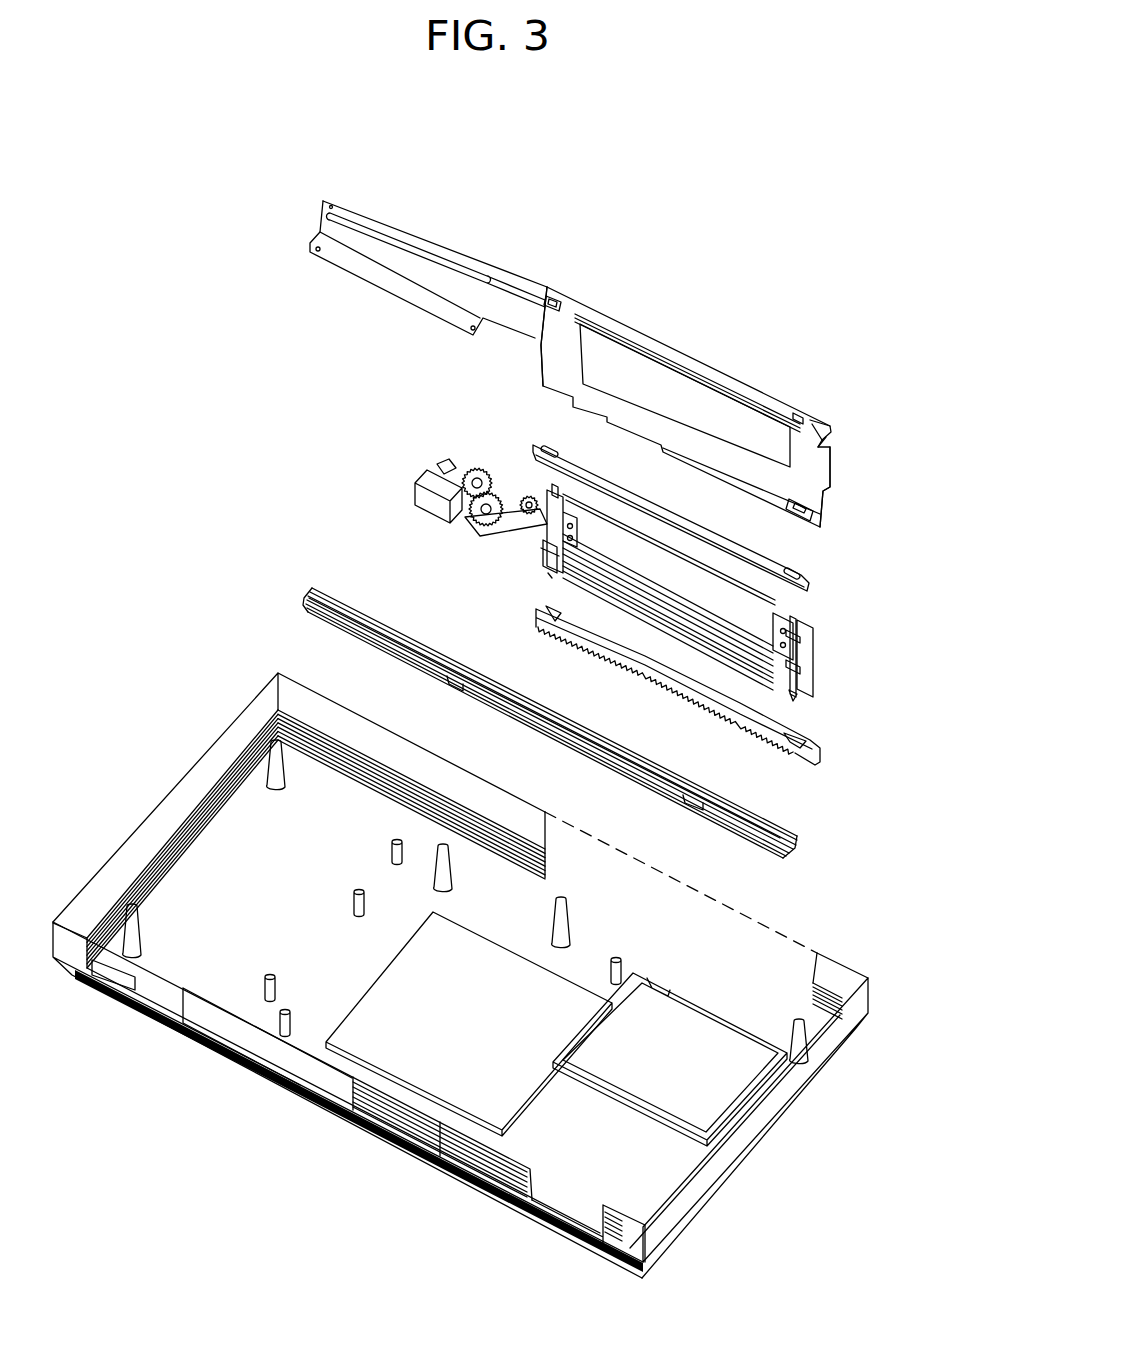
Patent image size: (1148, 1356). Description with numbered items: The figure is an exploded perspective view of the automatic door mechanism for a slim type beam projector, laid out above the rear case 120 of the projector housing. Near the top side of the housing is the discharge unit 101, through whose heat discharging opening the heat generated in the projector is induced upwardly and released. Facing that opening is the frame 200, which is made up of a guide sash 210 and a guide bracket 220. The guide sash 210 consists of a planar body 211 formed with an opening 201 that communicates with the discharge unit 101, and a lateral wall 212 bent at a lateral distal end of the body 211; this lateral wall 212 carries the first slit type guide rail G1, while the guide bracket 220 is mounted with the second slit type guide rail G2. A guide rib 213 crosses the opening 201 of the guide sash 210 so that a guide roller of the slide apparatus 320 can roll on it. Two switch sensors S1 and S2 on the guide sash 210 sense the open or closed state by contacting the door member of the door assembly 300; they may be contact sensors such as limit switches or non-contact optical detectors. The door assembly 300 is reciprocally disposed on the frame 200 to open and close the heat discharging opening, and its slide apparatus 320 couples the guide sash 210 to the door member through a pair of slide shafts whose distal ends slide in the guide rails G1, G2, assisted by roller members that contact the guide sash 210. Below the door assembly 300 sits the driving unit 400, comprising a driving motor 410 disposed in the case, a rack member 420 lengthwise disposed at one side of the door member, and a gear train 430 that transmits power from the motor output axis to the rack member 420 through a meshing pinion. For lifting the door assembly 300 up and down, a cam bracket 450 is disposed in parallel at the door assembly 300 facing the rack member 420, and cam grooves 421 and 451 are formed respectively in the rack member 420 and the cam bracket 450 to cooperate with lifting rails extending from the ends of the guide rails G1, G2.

The discharge unit 101 is at (468, 975).
The rear case 120 is at (723, 1153).
The frame 200 is at (537, 283).
The opening 201 is at (663, 377).
The guide sash 210 is at (705, 400).
The planar body 211 is at (553, 340).
The lateral wall 212 is at (812, 425).
The guide rib 213 is at (703, 410).
The guide bracket 220 is at (491, 723).
The door assembly 300 is at (702, 595).
The slide apparatus 320 is at (541, 528).
The driving unit 400 is at (418, 454).
The driving motor 410 is at (432, 490).
The rack member 420 is at (671, 685).
The cam groove 421 is at (547, 610).
The gear train 430 is at (478, 472).
The cam bracket 450 is at (709, 502).
The cam groove 451 is at (548, 450).
The first slit type guide rail G1 is at (604, 320).
The second slit type guide rail G2 is at (580, 730).
The switch sensor S1 is at (820, 520).
The switch sensor S2 is at (556, 300).